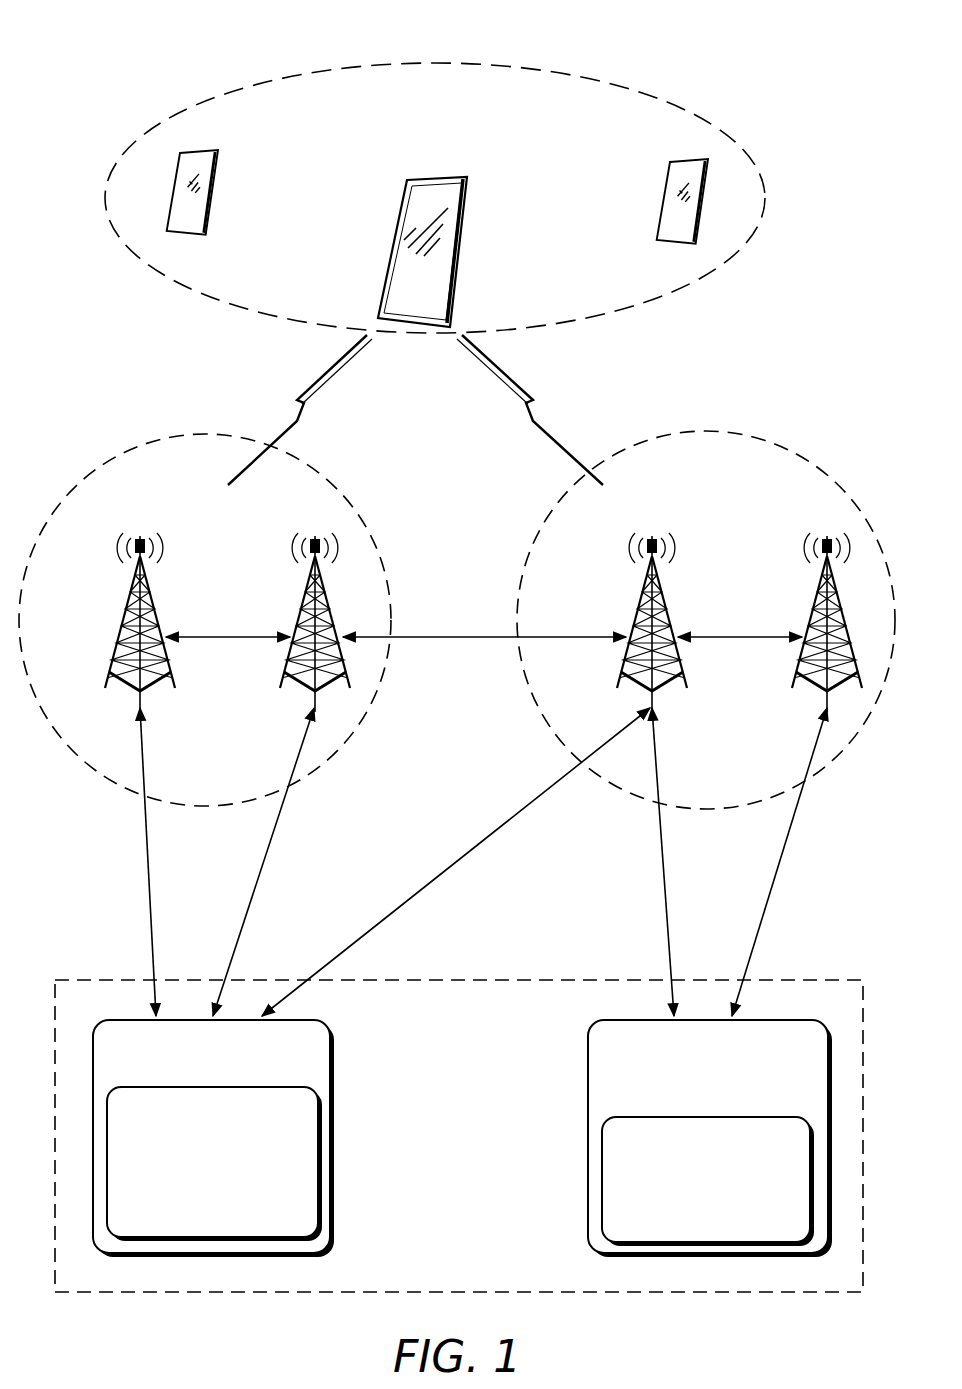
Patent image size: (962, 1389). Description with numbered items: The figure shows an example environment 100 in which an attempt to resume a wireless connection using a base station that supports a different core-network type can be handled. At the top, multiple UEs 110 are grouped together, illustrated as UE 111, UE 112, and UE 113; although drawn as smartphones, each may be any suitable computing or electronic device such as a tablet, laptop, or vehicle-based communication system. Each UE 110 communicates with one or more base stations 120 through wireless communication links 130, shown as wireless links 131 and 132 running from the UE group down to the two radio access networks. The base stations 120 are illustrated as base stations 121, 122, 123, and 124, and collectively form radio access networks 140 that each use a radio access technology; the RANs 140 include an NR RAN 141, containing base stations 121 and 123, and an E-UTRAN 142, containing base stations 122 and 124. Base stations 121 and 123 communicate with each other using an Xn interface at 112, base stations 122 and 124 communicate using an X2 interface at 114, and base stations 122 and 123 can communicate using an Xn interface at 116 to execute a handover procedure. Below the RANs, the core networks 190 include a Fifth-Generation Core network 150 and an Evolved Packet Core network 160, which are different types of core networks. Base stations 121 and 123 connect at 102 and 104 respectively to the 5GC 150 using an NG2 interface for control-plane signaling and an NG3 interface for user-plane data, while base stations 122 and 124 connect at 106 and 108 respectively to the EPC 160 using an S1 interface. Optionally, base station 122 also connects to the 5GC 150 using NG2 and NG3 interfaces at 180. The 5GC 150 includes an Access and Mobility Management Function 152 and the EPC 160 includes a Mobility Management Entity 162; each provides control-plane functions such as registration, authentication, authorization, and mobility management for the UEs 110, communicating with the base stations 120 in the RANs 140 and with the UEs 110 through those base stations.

The environment 100 is at (146, 31).
The user equipment 110 is at (687, 106).
The UE 111 is at (472, 178).
The UE / Xn interface connection 112 is at (224, 149).
The UE 113 is at (667, 160).
The wireless communication links 130 is at (418, 410).
The wireless link 131 is at (284, 409).
The wireless link 132 is at (561, 420).
The radio access network 140 is at (457, 612).
The NR RAN 141 is at (359, 489).
The E-UTRAN 142 is at (561, 489).
The base stations 120 is at (450, 595).
The base station 121 is at (127, 600).
The base station 122 is at (639, 600).
The base station 123 is at (302, 600).
The base station 124 is at (814, 600).
The X2 interface connection 114 is at (772, 644).
The Xn interface connection 116 is at (486, 644).
The connection to 5GC 102 is at (152, 856).
The connection to 5GC 104 is at (270, 856).
The connection to EPC 106 is at (659, 857).
The connection to EPC 108 is at (779, 857).
The connection of base station 122 to 5GC 180 is at (437, 888).
The core networks 190 is at (510, 973).
The Fifth-Generation Core network 150 is at (213, 1138).
The Access and Mobility Management Function 152 is at (214, 1164).
The Evolved Packet Core network 160 is at (710, 1138).
The Mobility Management Entity 162 is at (708, 1181).